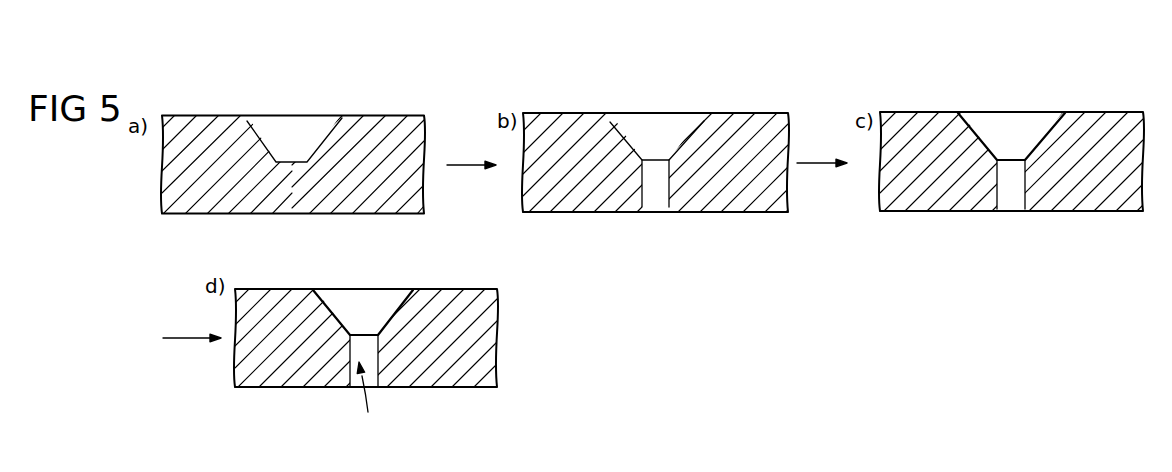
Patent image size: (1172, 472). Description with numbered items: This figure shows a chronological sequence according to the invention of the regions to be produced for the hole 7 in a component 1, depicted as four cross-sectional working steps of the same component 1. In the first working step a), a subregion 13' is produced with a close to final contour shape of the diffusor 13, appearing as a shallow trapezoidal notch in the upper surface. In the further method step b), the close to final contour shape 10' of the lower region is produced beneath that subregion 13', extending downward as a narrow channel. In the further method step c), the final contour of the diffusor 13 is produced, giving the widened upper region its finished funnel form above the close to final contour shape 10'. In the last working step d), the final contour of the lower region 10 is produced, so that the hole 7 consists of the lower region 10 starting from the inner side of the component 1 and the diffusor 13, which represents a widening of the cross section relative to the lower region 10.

The component 1 is at (140, 183).
The subregion 13' is at (475, 115).
The close to final contour shape of the lower region 10' is at (831, 210).
The diffusor 13 is at (689, 202).
The lower region 10 is at (398, 381).
The hole 7 is at (366, 402).